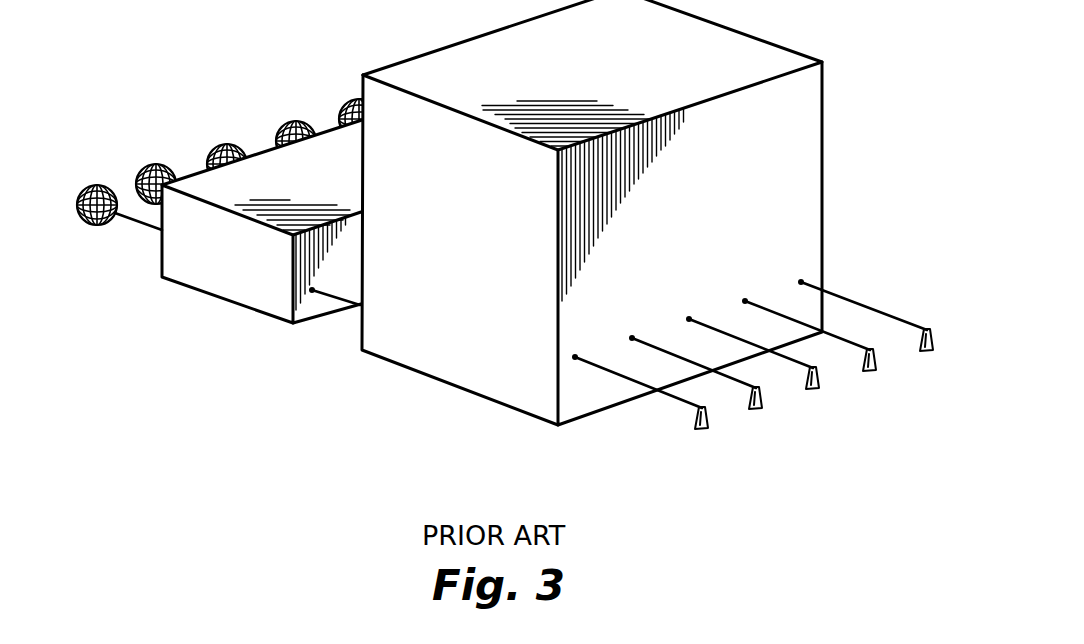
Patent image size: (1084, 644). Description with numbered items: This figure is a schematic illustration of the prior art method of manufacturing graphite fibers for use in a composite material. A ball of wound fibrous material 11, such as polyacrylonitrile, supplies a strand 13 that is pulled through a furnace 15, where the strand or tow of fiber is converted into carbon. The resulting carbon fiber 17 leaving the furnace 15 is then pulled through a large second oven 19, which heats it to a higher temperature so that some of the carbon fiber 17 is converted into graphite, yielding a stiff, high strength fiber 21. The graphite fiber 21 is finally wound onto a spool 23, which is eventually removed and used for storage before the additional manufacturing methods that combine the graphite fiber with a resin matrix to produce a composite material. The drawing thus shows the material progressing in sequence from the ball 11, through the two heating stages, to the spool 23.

The ball of wound fibrous material 11 is at (209, 150).
The strand 13 is at (132, 225).
The furnace 15 is at (232, 253).
The carbon fiber 17 is at (314, 292).
The large second oven 19 is at (460, 295).
The stiff, high strength fiber 21 is at (637, 383).
The spool 23 is at (707, 412).